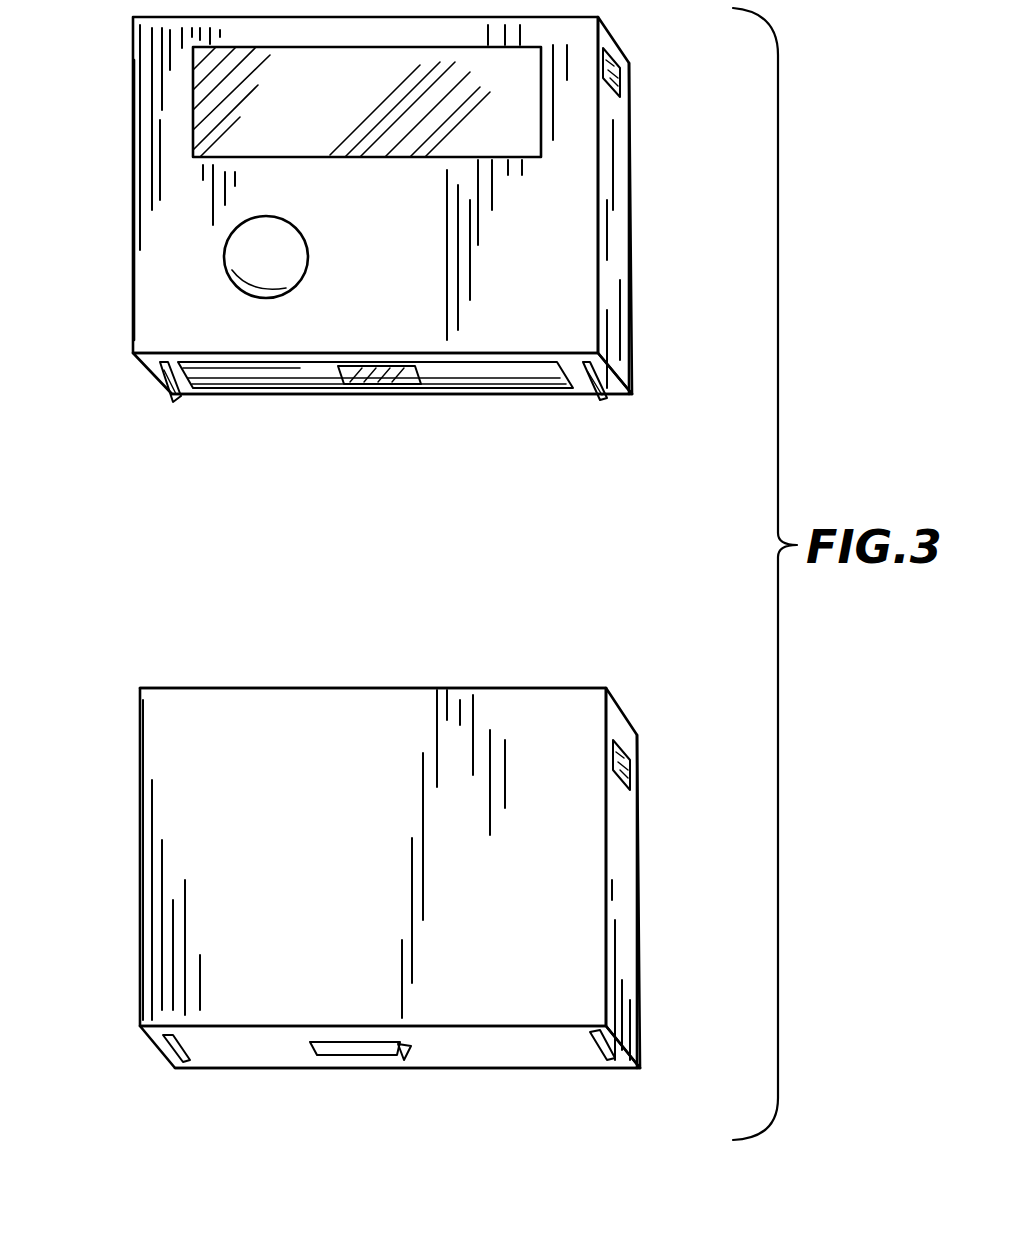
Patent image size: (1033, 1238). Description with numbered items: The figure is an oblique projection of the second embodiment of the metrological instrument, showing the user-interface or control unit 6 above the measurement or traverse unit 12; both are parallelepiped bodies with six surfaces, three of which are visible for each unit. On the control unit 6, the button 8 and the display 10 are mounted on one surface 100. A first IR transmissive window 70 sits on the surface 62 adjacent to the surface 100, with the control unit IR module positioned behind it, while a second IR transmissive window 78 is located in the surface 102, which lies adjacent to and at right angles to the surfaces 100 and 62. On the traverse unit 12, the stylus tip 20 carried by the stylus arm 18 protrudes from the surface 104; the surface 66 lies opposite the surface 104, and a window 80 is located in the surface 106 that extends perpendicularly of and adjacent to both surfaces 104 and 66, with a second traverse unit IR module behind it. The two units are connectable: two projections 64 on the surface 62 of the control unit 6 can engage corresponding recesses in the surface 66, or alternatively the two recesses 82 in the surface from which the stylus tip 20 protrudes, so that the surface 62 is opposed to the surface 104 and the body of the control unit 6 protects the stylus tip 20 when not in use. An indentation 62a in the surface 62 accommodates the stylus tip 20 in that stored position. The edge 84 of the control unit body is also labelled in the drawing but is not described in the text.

The control unit 6 is at (656, 196).
The button 8 is at (290, 260).
The display 10 is at (378, 140).
The traverse unit 12 is at (662, 900).
The stylus arm 18 is at (345, 1050).
The stylus tip 20 is at (405, 1060).
The surface 62 is at (186, 398).
The indentation 62a is at (297, 378).
The projections 64 is at (160, 392).
The surface 66 is at (390, 688).
The first IR transmissive window 70 is at (400, 382).
The second IR transmissive window 78 is at (620, 77).
The window 80 is at (630, 768).
The recesses 82 is at (170, 1064).
The bottom edge 84 is at (490, 390).
The surface 100 is at (165, 278).
The surface 102 is at (623, 284).
The surface 104 is at (505, 1052).
The surface 106 is at (625, 946).